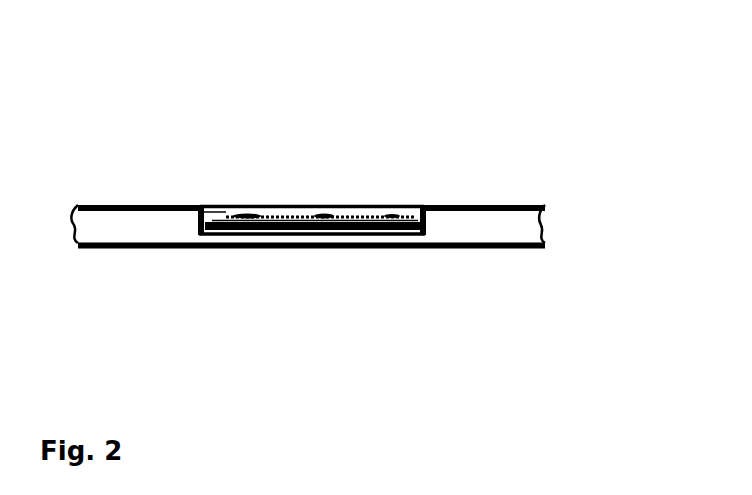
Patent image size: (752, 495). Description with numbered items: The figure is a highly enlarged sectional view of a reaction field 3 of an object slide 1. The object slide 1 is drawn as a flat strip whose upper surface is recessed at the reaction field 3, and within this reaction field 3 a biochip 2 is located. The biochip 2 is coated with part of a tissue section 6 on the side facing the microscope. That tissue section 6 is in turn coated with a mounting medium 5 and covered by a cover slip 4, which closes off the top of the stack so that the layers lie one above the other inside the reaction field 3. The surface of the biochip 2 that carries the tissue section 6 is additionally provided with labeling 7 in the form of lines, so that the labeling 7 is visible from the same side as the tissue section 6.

The object slide 1 is at (505, 230).
The biochip 2 is at (411, 232).
The reaction field 3 is at (212, 222).
The cover slip 4 is at (214, 212).
The mounting medium 5 is at (286, 207).
The tissue section 6 is at (396, 210).
The labeling 7 is at (351, 209).